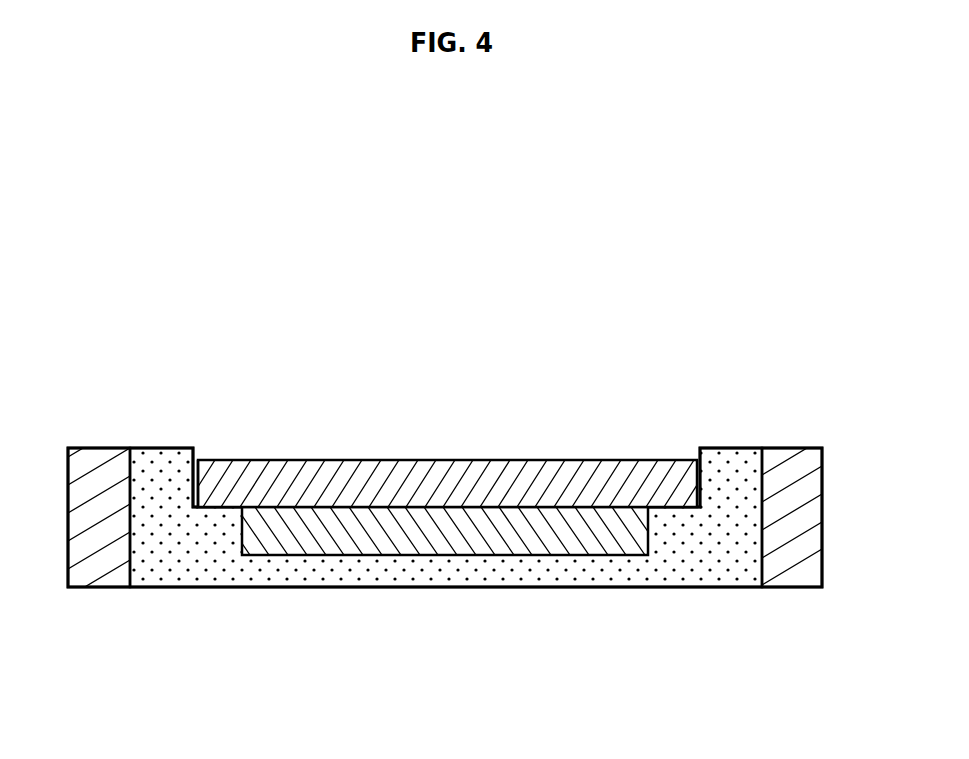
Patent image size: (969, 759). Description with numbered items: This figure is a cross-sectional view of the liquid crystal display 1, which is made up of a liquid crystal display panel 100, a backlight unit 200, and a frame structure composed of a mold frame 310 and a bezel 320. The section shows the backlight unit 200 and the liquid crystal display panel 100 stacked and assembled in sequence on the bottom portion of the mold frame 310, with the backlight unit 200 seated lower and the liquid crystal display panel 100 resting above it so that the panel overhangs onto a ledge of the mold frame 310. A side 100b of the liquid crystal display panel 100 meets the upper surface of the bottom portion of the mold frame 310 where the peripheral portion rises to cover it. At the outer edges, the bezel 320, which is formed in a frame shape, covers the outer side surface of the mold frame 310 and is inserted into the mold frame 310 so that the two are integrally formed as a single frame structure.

The liquid crystal display 1 is at (651, 367).
The liquid crystal display panel 100 is at (482, 478).
The side of the liquid crystal display panel 100b is at (199, 466).
The backlight unit 200 is at (448, 540).
The mold frame 310 is at (160, 456).
The bezel 320 is at (98, 456).